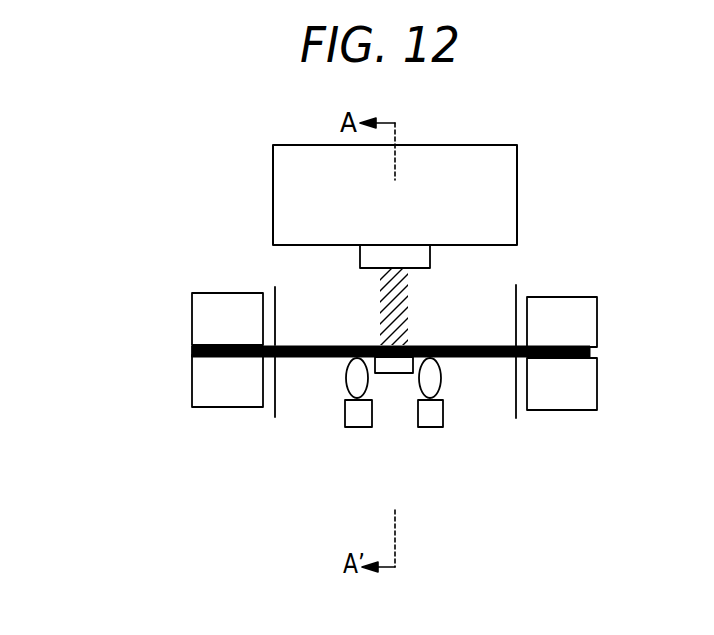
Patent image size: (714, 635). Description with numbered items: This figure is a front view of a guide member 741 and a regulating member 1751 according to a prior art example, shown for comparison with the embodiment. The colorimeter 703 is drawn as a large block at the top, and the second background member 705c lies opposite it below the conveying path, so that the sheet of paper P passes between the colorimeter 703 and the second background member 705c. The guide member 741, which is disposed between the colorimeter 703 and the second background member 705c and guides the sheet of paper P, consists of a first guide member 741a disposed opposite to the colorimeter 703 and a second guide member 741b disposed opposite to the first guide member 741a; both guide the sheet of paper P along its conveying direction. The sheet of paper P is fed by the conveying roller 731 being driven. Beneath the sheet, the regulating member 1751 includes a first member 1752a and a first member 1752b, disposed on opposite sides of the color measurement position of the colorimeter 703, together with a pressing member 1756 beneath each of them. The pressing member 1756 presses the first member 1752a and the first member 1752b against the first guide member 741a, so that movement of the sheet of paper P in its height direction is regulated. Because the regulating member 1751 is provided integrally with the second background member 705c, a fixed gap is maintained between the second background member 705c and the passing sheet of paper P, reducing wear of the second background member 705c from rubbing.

The colorimeter 703 is at (503, 212).
The second background member 705c is at (372, 347).
The sheet of paper P is at (574, 341).
The guide member 741 is at (157, 305).
The first guide member 741a is at (272, 287).
The second guide member 741b is at (273, 383).
The conveying roller 731 is at (597, 362).
The regulating member 1751 is at (363, 443).
The first member 1752a is at (350, 380).
The first member 1752b is at (435, 378).
The pressing member 1756 is at (375, 440).